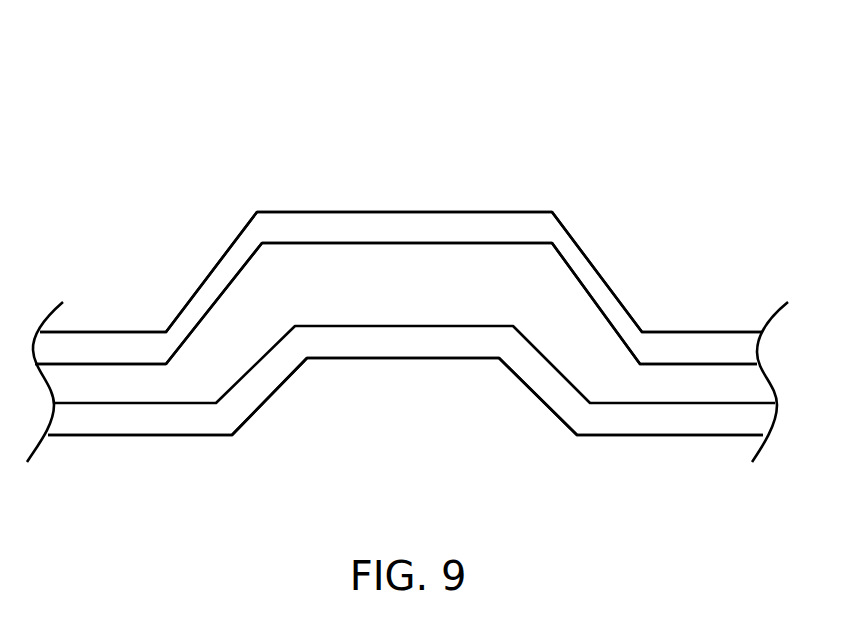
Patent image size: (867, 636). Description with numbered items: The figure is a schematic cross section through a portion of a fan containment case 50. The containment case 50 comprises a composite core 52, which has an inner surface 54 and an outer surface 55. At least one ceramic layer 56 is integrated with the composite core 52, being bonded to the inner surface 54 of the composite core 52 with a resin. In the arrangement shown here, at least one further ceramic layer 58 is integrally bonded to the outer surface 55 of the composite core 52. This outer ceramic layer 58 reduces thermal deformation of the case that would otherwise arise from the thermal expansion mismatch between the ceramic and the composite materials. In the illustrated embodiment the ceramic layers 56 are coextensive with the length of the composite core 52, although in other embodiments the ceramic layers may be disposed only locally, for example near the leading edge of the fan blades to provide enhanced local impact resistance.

The containment case 50 is at (407, 249).
The composite core 52 is at (415, 257).
The inner surface 54 is at (458, 327).
The outer surface 55 is at (510, 243).
The ceramic layer 56 is at (197, 427).
The ceramic layer 58 is at (298, 222).